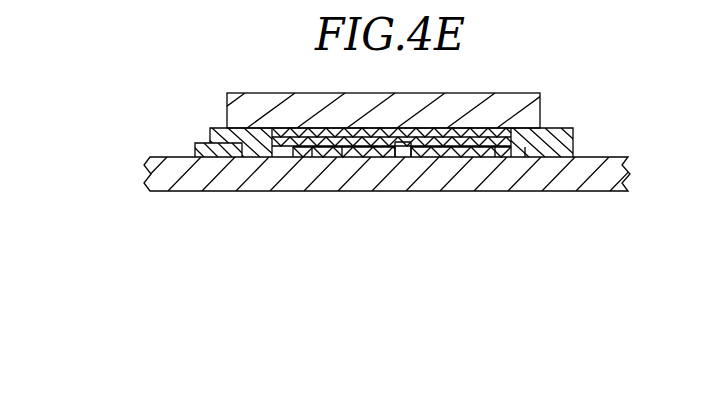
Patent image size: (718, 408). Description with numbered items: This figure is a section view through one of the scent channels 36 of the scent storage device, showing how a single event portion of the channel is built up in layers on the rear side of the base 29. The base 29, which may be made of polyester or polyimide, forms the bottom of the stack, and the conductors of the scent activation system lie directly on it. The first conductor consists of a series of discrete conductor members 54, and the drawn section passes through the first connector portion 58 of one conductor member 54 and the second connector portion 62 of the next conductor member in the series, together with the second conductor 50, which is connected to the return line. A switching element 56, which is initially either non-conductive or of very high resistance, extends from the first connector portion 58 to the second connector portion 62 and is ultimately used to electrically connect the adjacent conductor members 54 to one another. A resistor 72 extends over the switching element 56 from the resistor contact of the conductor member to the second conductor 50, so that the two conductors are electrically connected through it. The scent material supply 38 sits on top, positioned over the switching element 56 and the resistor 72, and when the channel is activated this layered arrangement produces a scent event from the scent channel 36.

The base 29 is at (572, 182).
The scent channel 36 is at (448, 79).
The scent material supply 38 is at (505, 100).
The resistor 72 is at (558, 128).
The conductor member 54 is at (585, 150).
The second conductor 50 is at (210, 152).
The second connector portion 62 is at (327, 152).
The switching element 56 is at (403, 152).
The first connector portion 58 is at (510, 152).